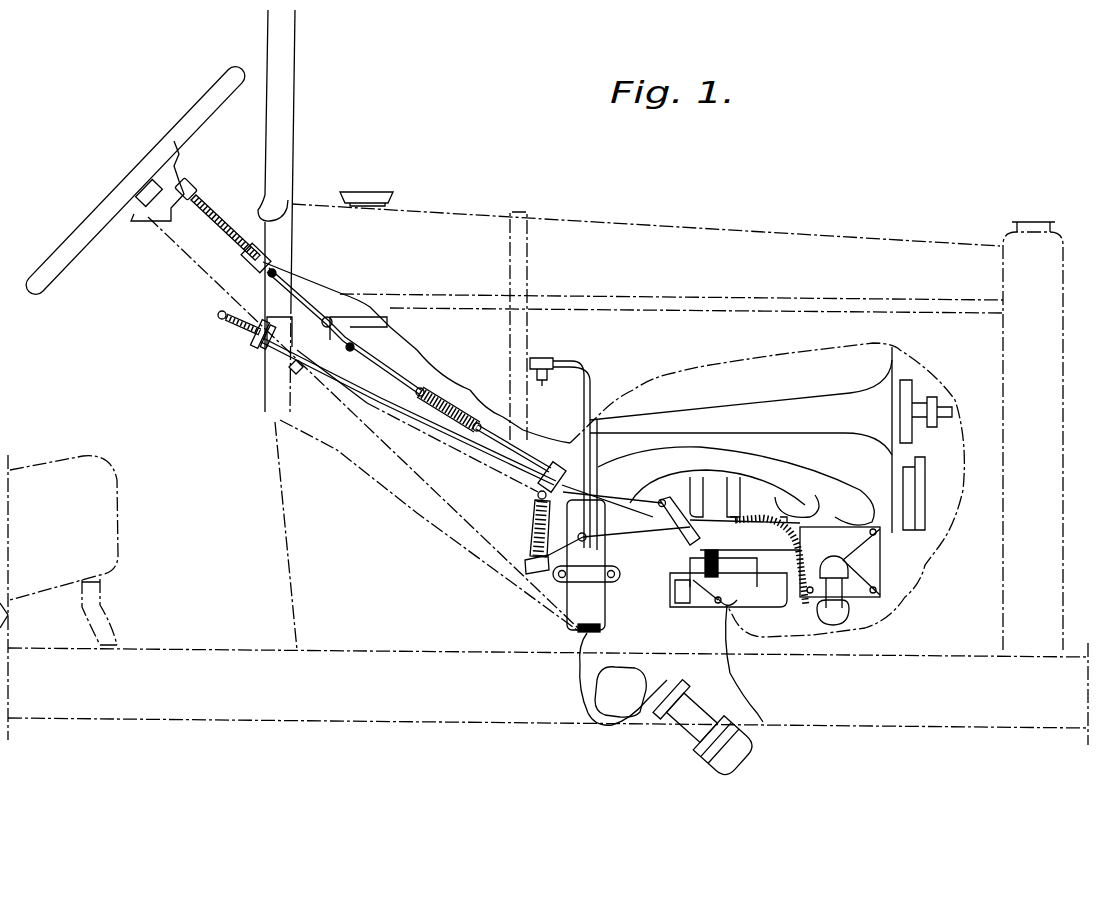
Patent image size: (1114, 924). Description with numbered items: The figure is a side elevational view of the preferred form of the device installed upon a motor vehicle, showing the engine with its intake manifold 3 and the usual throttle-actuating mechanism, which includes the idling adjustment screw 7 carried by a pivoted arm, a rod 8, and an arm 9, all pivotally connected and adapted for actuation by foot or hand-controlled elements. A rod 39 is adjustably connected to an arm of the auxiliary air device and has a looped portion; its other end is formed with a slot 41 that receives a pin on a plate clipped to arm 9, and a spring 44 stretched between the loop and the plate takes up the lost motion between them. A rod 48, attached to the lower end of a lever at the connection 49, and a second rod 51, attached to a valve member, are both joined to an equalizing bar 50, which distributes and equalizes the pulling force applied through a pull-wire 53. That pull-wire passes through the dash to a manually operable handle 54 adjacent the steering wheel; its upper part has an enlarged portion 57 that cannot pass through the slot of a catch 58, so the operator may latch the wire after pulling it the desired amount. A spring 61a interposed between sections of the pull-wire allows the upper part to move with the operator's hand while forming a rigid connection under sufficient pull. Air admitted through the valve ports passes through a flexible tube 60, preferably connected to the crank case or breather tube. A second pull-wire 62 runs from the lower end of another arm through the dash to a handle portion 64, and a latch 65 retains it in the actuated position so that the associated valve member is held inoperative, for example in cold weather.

The intake manifold 3 is at (780, 473).
The idling adjustment screw 7 is at (782, 596).
The rod 8 is at (633, 553).
The arm 9 is at (537, 527).
The rod 39 is at (528, 567).
The slot 41 is at (533, 556).
The spring 44 is at (537, 537).
The rod 48 is at (658, 547).
The connection 49 is at (582, 533).
The equalizing bar 50 is at (554, 468).
The second rod 51 is at (603, 493).
The pull-wire 53 is at (380, 366).
The manually operable handle 54 is at (195, 183).
The enlarged portion 57 is at (201, 221).
The catch 58 is at (256, 235).
The flexible tube 60 is at (797, 532).
The spring 61a is at (432, 400).
The second pull-wire 62 is at (413, 408).
The handle portion 64 is at (218, 313).
The latch 65 is at (261, 350).